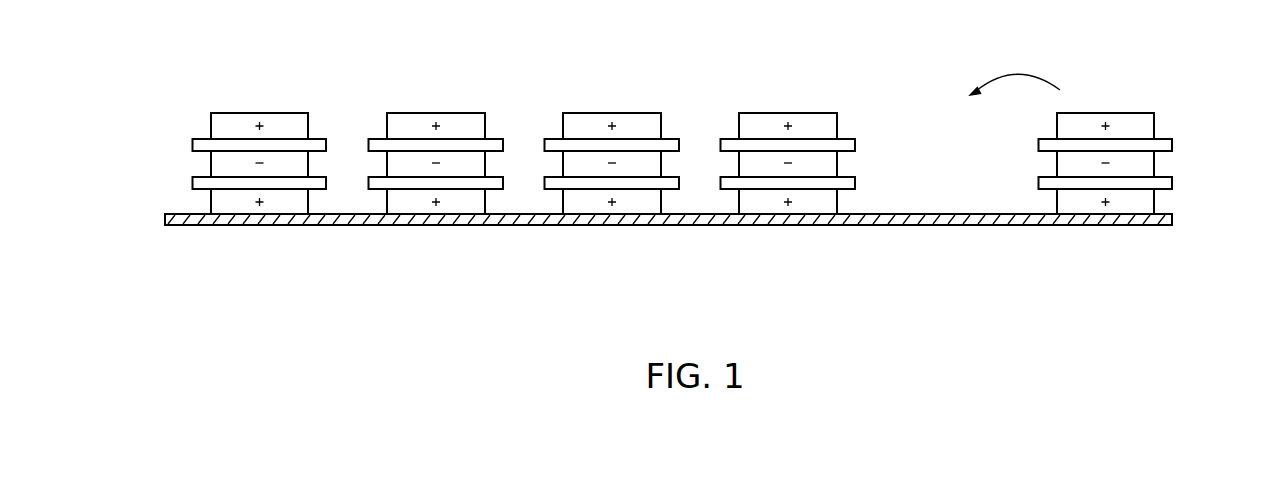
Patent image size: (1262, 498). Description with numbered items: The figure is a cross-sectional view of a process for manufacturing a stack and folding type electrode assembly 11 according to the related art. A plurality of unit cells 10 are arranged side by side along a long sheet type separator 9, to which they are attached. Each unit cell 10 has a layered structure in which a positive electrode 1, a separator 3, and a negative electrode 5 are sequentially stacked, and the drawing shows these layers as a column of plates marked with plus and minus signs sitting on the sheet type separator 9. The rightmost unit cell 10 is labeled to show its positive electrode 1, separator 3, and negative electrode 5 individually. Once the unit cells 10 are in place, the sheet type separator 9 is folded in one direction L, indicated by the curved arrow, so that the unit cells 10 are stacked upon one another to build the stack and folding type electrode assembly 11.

The positive electrode 1 is at (1148, 123).
The separator 3 is at (1167, 145).
The negative electrode 5 is at (1148, 167).
The sheet type separator 9 is at (1148, 220).
The unit cell 10 is at (1027, 113).
The stack and folding type electrode assembly 11 is at (285, 48).
The folding direction L is at (1015, 70).